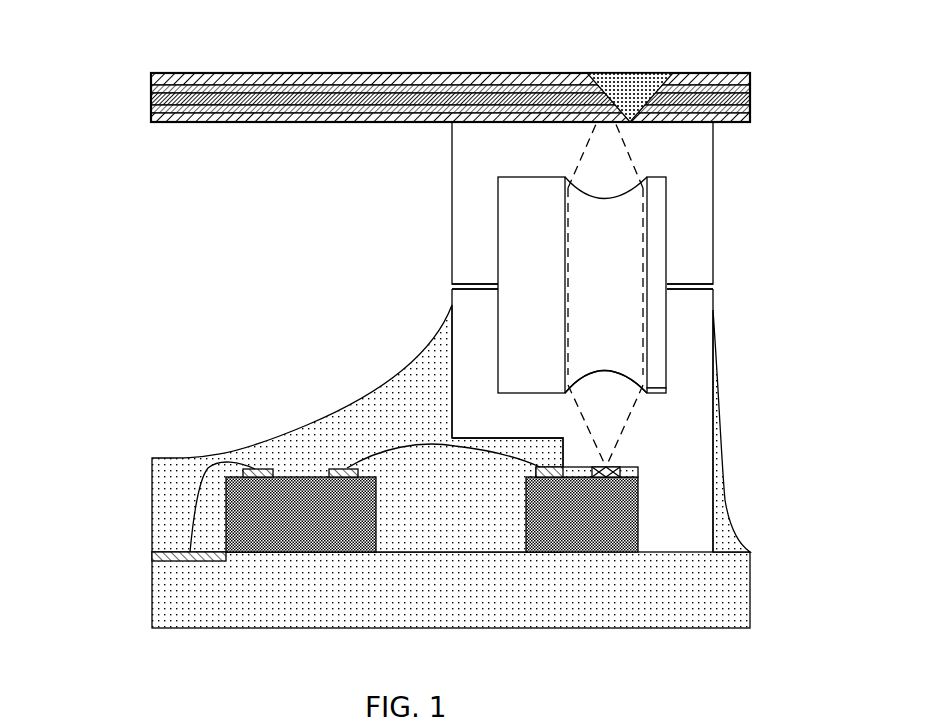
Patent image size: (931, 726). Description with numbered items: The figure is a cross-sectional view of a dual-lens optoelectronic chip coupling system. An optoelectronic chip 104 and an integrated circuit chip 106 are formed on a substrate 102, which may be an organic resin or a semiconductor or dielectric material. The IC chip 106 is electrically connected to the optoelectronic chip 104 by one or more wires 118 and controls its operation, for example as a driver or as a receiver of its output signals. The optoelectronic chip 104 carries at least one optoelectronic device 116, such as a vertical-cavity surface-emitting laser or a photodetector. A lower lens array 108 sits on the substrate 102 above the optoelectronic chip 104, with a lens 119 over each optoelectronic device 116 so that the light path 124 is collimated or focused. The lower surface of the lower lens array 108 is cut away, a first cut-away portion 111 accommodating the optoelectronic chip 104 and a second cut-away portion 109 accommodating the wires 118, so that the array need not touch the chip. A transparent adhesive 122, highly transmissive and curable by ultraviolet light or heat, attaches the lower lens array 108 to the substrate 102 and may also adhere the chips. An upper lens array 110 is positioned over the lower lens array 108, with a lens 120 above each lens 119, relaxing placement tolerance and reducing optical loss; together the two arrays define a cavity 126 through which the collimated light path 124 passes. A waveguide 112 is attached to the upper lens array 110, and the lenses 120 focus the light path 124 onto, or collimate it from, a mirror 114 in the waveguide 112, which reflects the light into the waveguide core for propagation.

The substrate 102 is at (152, 592).
The optoelectronic chip 104 is at (572, 628).
The integrated circuit chip 106 is at (292, 628).
The lower lens array 108 is at (450, 300).
The second cut-away portion 109 is at (497, 438).
The upper lens array 110 is at (450, 218).
The first cut-away portion 111 is at (640, 468).
The waveguide 112 is at (150, 96).
The mirror 114 is at (630, 73).
The optoelectronic device 116 is at (620, 467).
The wire 118 is at (472, 446).
The lens 119 is at (643, 385).
The lens 120 is at (640, 187).
The transparent adhesive 122 is at (152, 497).
The light path 124 is at (643, 240).
The cavity 126 is at (618, 303).